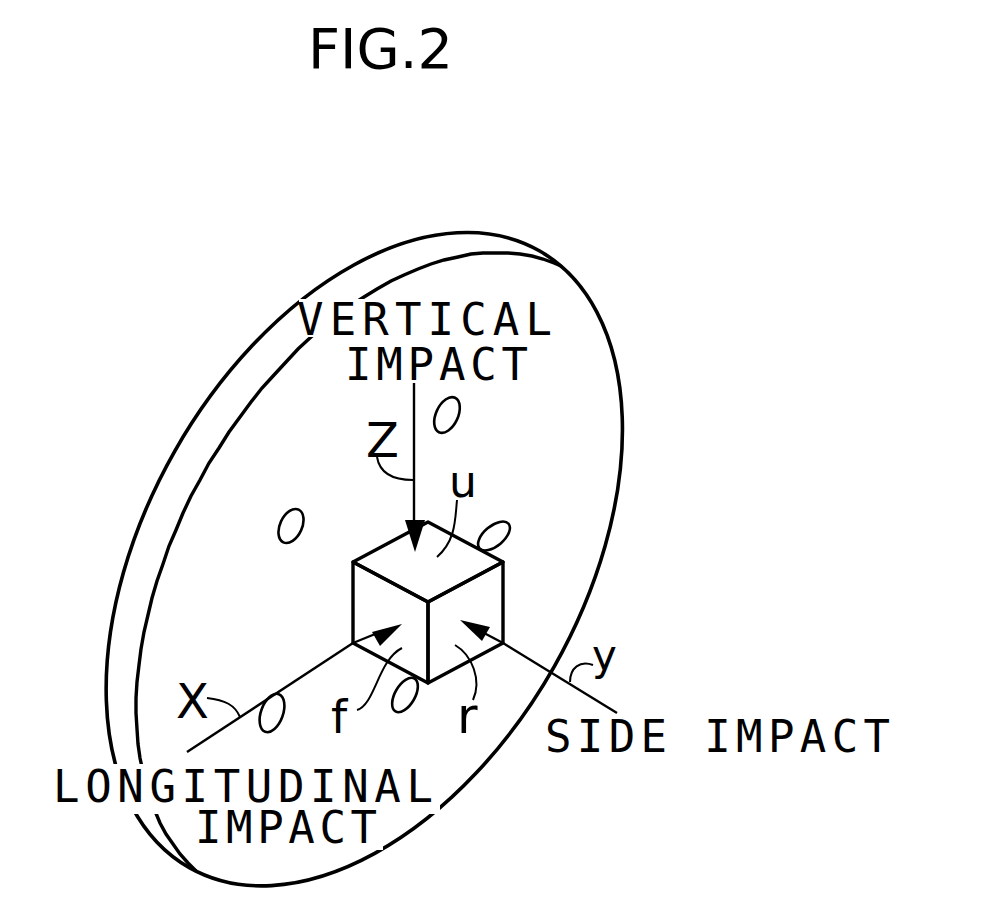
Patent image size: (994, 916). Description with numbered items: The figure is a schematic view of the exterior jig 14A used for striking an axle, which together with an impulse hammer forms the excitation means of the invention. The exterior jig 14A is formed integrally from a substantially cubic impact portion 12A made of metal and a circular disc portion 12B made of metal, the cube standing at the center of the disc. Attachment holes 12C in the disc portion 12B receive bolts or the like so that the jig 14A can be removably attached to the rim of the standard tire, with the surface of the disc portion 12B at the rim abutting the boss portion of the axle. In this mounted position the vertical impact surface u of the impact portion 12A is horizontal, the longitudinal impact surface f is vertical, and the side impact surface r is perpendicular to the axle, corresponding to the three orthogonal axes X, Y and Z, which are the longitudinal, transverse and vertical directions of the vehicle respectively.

The impact portion 12A is at (490, 600).
The circular disc portion 12B is at (603, 467).
The attachment holes 12C is at (435, 409).
The exterior jig 14A is at (606, 304).